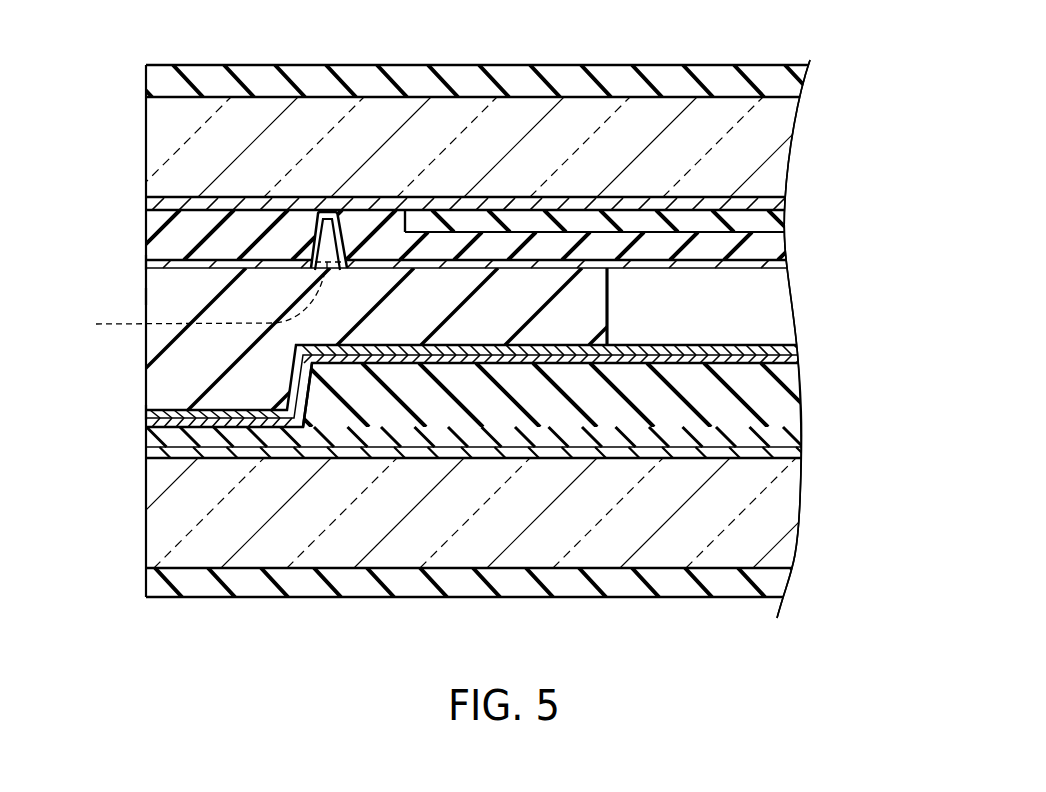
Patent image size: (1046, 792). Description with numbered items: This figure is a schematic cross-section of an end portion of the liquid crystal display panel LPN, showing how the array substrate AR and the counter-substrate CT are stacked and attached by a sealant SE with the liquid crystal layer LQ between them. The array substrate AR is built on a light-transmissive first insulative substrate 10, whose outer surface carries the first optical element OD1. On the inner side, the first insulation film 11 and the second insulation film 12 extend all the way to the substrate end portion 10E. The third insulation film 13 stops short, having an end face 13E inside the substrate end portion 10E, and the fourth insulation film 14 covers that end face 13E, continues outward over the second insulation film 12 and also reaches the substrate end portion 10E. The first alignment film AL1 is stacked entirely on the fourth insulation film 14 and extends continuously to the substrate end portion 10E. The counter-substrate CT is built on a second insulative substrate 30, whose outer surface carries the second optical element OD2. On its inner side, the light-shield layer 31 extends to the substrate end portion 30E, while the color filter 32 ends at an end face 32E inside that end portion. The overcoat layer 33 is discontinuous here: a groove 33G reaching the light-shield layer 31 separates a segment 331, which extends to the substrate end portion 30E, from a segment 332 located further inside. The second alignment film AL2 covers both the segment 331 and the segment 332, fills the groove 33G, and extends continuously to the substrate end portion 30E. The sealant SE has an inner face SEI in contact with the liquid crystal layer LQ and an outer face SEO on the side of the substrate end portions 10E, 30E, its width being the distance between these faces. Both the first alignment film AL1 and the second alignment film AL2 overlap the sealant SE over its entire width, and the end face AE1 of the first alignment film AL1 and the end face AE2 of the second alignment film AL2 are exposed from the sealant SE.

The second optical element OD2 is at (782, 86).
The counter-substrate CT is at (791, 124).
The second insulative substrate 30 is at (765, 170).
The light-shield layer 31 is at (762, 205).
The color filter 32 is at (770, 219).
The overcoat layer 33 is at (778, 248).
The second alignment film AL2 is at (773, 272).
The liquid crystal layer LQ is at (777, 307).
The first alignment film AL1 is at (780, 345).
The fourth insulation film 14 is at (780, 358).
The third insulation film 13 is at (775, 397).
The second insulation film 12 is at (783, 435).
The first insulation film 11 is at (795, 457).
The array substrate AR is at (808, 495).
The first insulative substrate 10 is at (775, 538).
The first optical element OD1 is at (773, 587).
The liquid crystal display panel LPN is at (898, 215).
The substrate end portion 30E is at (146, 130).
The end face of the second alignment film AE2 is at (146, 262).
The outer face of the sealant SEO is at (146, 296).
The groove 33G is at (197, 301).
The sealant SE is at (155, 352).
The end face of the third insulation film 13E is at (292, 383).
The end face of the first alignment film AE1 is at (146, 411).
The substrate end portion 10E is at (146, 522).
The segment of the overcoat layer 331 is at (247, 226).
The segment of the overcoat layer 332 is at (358, 224).
The end face of the color filter 32E is at (390, 212).
The inner face of the sealant SEI is at (617, 300).